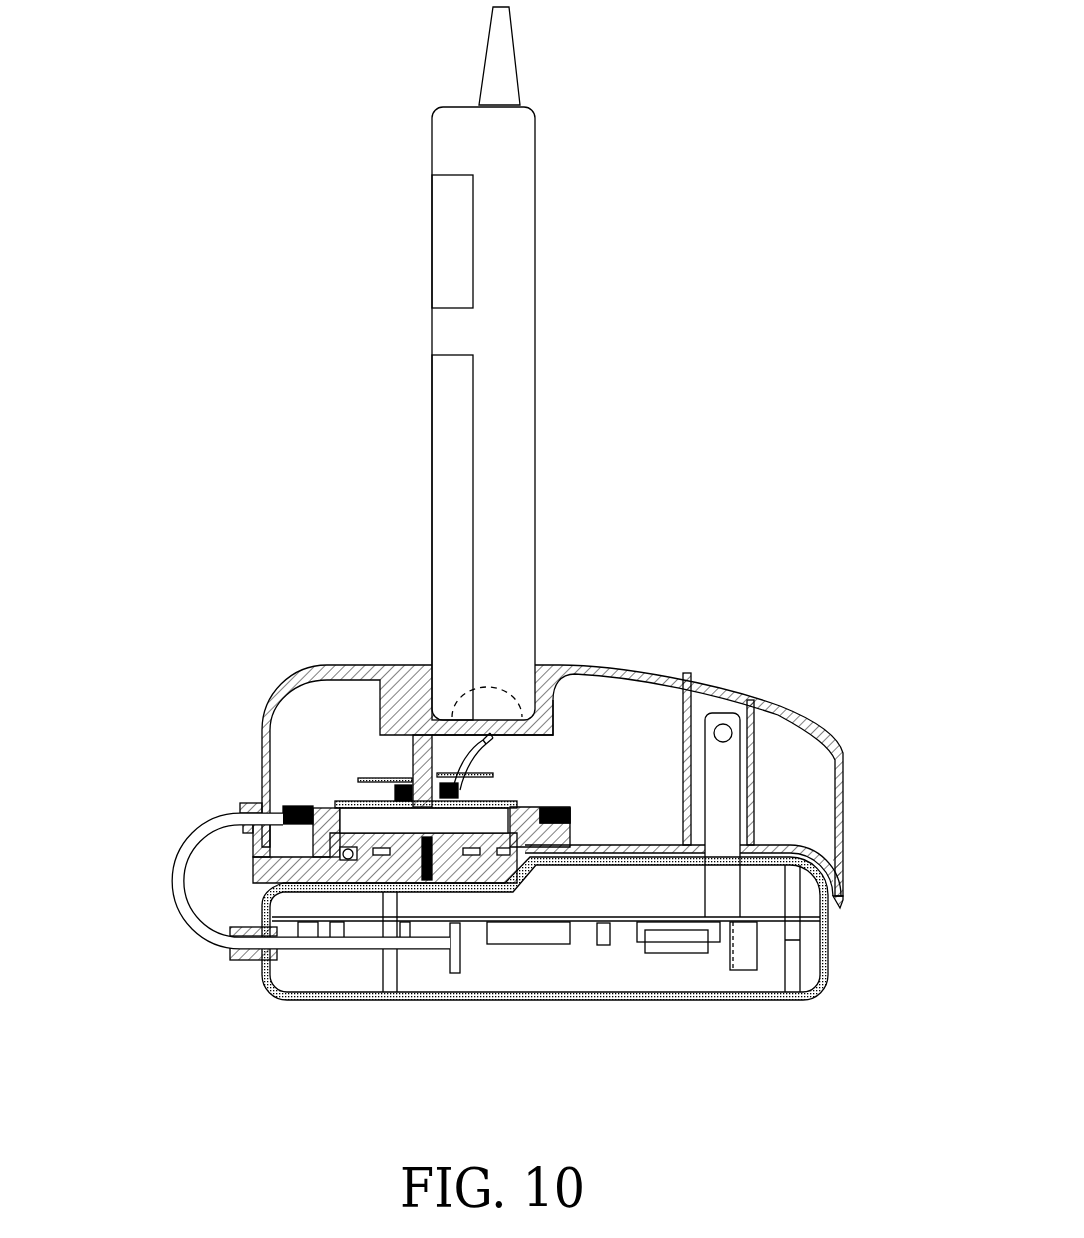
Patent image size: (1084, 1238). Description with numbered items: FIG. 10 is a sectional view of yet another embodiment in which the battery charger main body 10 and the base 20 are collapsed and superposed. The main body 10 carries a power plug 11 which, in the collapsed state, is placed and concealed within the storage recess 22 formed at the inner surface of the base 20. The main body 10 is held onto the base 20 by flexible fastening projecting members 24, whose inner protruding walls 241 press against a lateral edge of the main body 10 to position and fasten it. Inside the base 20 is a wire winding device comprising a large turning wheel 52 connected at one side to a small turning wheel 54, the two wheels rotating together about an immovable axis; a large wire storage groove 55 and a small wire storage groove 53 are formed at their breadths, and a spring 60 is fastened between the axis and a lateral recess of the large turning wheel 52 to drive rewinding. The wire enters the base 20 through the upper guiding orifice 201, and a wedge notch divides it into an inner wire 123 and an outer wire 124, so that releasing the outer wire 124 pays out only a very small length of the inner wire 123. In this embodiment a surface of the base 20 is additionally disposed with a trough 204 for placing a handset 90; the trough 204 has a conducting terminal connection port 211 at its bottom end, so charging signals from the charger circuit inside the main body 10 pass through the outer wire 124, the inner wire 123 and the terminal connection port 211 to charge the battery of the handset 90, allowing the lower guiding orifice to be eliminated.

The battery charger main body 10 is at (455, 1003).
The power plug 11 is at (735, 752).
The base 20 is at (707, 680).
The storage recess 22 is at (801, 851).
The fastening projecting members 24 is at (255, 890).
The inner protruding walls 241 is at (253, 897).
The large turning wheel 52 is at (320, 826).
The small wire storage groove 53 is at (360, 788).
The small turning wheel 54 is at (405, 755).
The large wire storage groove 55 is at (573, 815).
The spring 60 is at (383, 823).
The handset 90 is at (515, 500).
The inner wire 123 is at (415, 770).
The outer wire 124 is at (265, 812).
The upper guiding orifice 201 is at (247, 807).
The trough 204 is at (548, 664).
The terminal connection port 211 is at (480, 728).